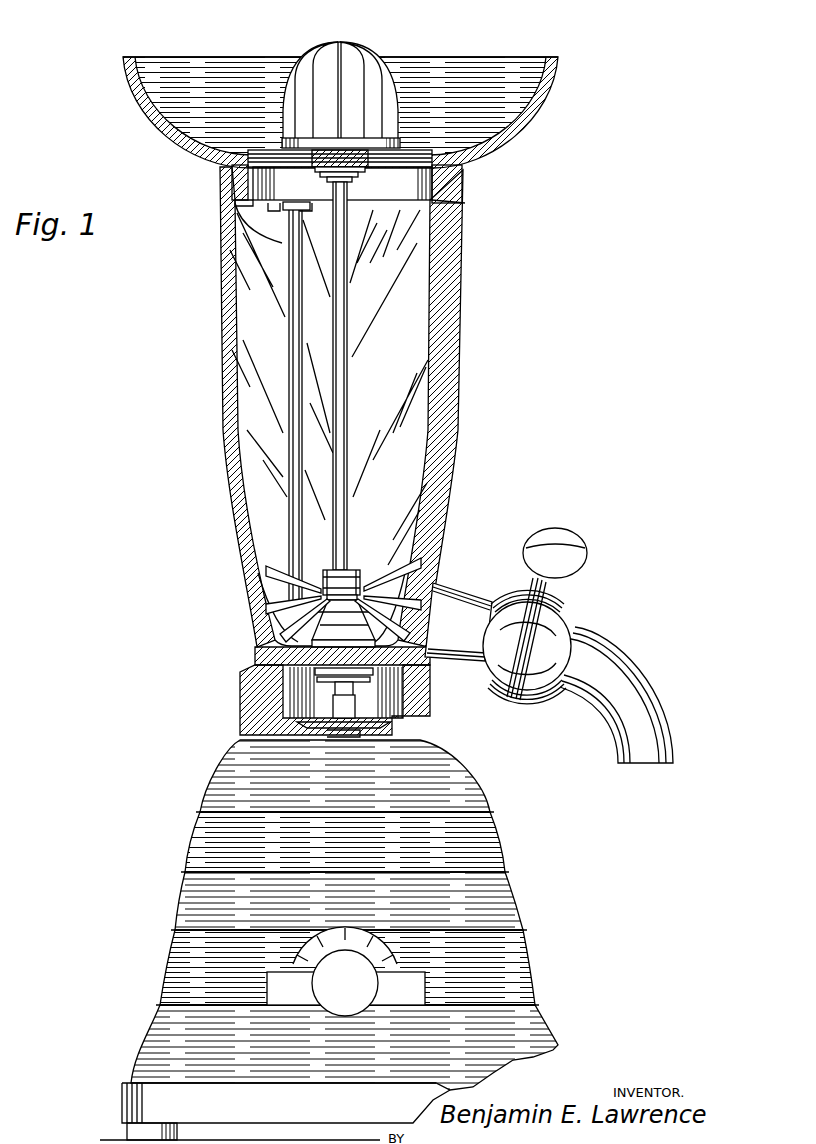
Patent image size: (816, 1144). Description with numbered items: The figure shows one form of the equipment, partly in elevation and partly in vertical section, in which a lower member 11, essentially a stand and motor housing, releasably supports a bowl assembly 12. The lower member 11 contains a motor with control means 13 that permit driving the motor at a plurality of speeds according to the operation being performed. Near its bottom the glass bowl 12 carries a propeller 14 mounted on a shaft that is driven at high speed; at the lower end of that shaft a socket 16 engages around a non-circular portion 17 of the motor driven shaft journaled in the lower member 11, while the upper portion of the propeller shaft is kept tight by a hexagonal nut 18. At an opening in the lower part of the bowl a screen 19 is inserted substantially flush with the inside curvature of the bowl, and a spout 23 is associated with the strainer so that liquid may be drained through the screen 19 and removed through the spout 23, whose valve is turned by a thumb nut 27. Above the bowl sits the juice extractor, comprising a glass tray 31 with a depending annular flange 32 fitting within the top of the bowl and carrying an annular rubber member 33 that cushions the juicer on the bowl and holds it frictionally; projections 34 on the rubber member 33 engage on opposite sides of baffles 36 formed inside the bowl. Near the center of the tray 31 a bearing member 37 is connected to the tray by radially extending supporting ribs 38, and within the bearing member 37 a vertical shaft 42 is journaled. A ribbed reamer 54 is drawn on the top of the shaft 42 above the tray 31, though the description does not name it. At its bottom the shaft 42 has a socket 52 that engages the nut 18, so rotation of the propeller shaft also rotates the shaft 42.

The lower member 11 is at (200, 872).
The bowl assembly 12 is at (466, 252).
The control means 13 is at (353, 1011).
The propeller 14 is at (268, 583).
The socket 16 is at (352, 690).
The non-circular portion 17 is at (355, 708).
The hexagonal nut 18 is at (318, 576).
The screen 19 is at (442, 584).
The spout 23 is at (634, 673).
The thumb nut 27 is at (576, 553).
The tray 31 is at (542, 107).
The depending annular flange 32 is at (247, 203).
The annular rubber member 33 is at (465, 172).
The projections 34 is at (252, 205).
The baffles 36 is at (441, 333).
The bearing member 37 is at (363, 158).
The supporting ribs 38 is at (318, 160).
The vertical shaft 42 is at (348, 388).
The socket 52 is at (360, 570).
The reamer 54 is at (357, 55).